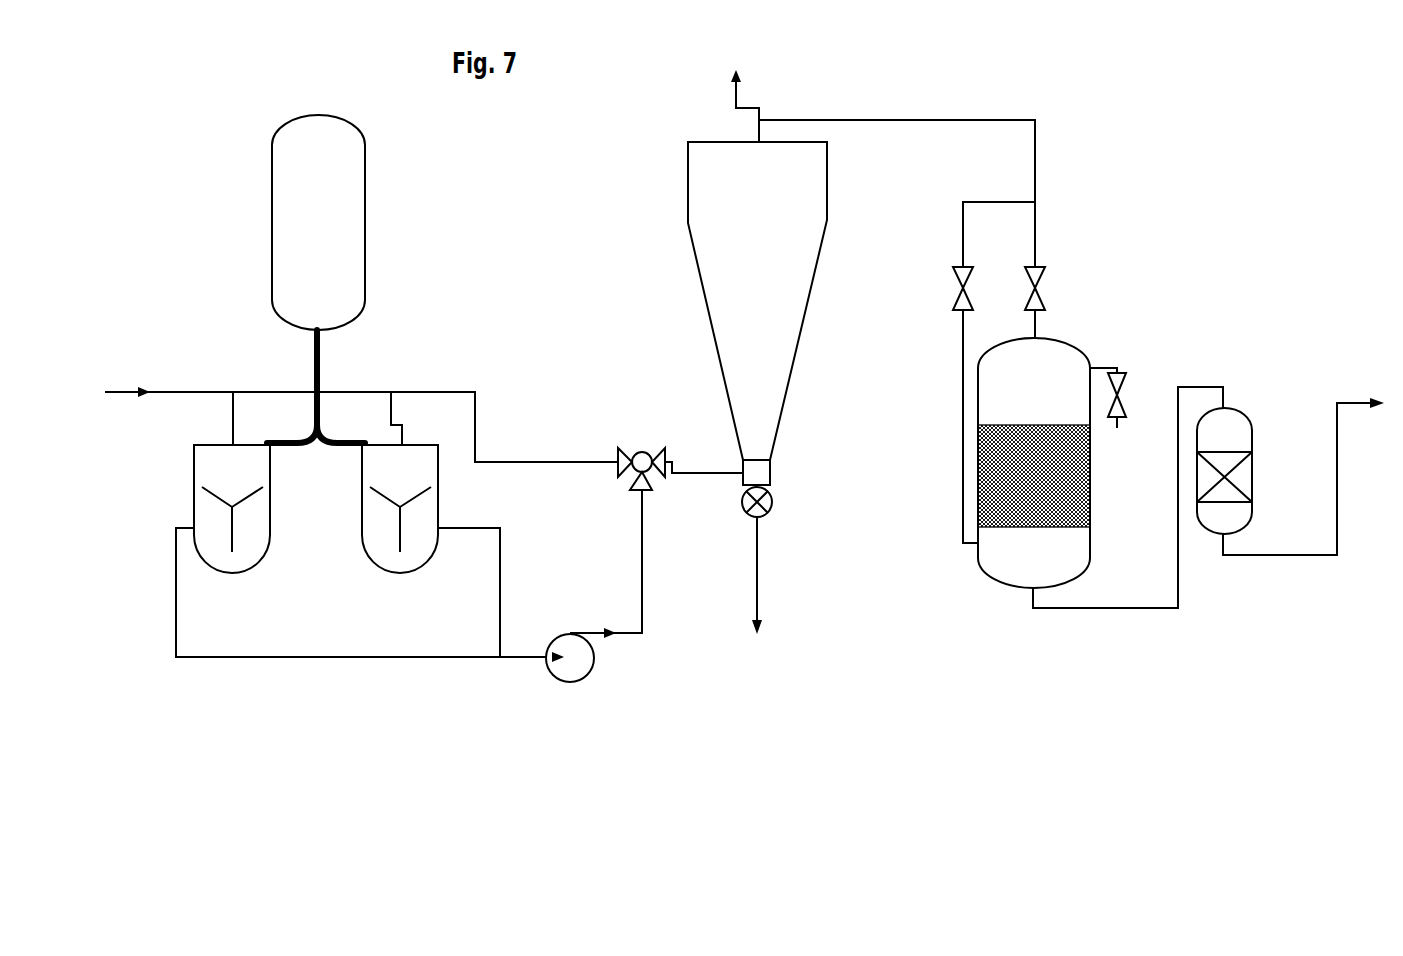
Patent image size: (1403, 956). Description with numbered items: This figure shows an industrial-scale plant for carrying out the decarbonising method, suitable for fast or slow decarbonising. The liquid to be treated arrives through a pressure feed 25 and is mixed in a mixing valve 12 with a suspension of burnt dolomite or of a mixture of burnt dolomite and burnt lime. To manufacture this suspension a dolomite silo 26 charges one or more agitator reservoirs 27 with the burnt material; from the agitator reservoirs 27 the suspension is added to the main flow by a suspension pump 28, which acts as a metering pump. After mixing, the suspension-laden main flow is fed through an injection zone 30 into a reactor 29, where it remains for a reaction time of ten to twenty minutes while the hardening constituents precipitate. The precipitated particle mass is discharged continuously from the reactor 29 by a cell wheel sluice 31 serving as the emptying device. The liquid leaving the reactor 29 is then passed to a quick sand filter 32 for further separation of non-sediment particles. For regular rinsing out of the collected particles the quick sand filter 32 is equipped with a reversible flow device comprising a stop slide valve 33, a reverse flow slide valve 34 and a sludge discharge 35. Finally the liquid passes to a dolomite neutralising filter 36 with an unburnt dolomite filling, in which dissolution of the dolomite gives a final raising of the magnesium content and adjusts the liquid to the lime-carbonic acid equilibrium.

The mixing valve 12 is at (642, 430).
The pressure feed 25 is at (130, 377).
The dolomite silo 26 is at (380, 180).
The agitator reservoir 27 is at (352, 567).
The suspension pump 28 is at (618, 688).
The reactor 29 is at (688, 263).
The injection zone 30 is at (790, 475).
The cell wheel sluice 31 is at (778, 502).
The quick sand filter 32 is at (987, 583).
The stop slide valve 33 is at (1058, 278).
The reverse flow slide valve 34 is at (943, 278).
The sludge discharge 35 is at (1117, 345).
The dolomite neutralising filter 36 is at (1245, 392).